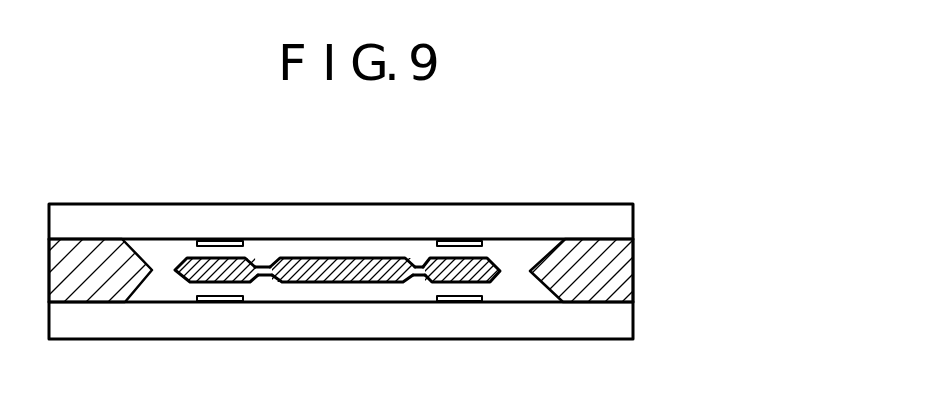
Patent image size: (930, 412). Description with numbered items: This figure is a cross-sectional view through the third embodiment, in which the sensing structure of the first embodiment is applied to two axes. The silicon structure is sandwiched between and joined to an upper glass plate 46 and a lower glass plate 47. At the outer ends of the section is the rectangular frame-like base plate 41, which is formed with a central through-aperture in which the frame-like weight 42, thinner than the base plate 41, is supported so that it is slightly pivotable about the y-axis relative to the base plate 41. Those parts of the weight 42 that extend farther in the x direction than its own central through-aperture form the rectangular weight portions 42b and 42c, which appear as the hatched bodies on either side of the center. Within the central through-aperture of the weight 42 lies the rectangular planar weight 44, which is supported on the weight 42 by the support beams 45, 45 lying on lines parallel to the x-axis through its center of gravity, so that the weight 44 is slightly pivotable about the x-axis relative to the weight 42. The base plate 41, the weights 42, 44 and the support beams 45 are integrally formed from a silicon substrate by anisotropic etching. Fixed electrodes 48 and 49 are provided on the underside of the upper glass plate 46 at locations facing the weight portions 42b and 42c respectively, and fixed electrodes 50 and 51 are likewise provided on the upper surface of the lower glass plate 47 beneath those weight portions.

The base plate 41 is at (623, 270).
The weight 42 is at (325, 275).
The weight portion 42b is at (187, 257).
The weight portion 42c is at (490, 258).
The weight 44 is at (323, 259).
The support beams 45 is at (265, 276).
The glass plate 46 is at (615, 214).
The glass plate 47 is at (597, 328).
The fixed electrode 48 is at (462, 241).
The fixed electrode 49 is at (220, 241).
The fixed electrode 50 is at (465, 301).
The fixed electrode 51 is at (220, 301).